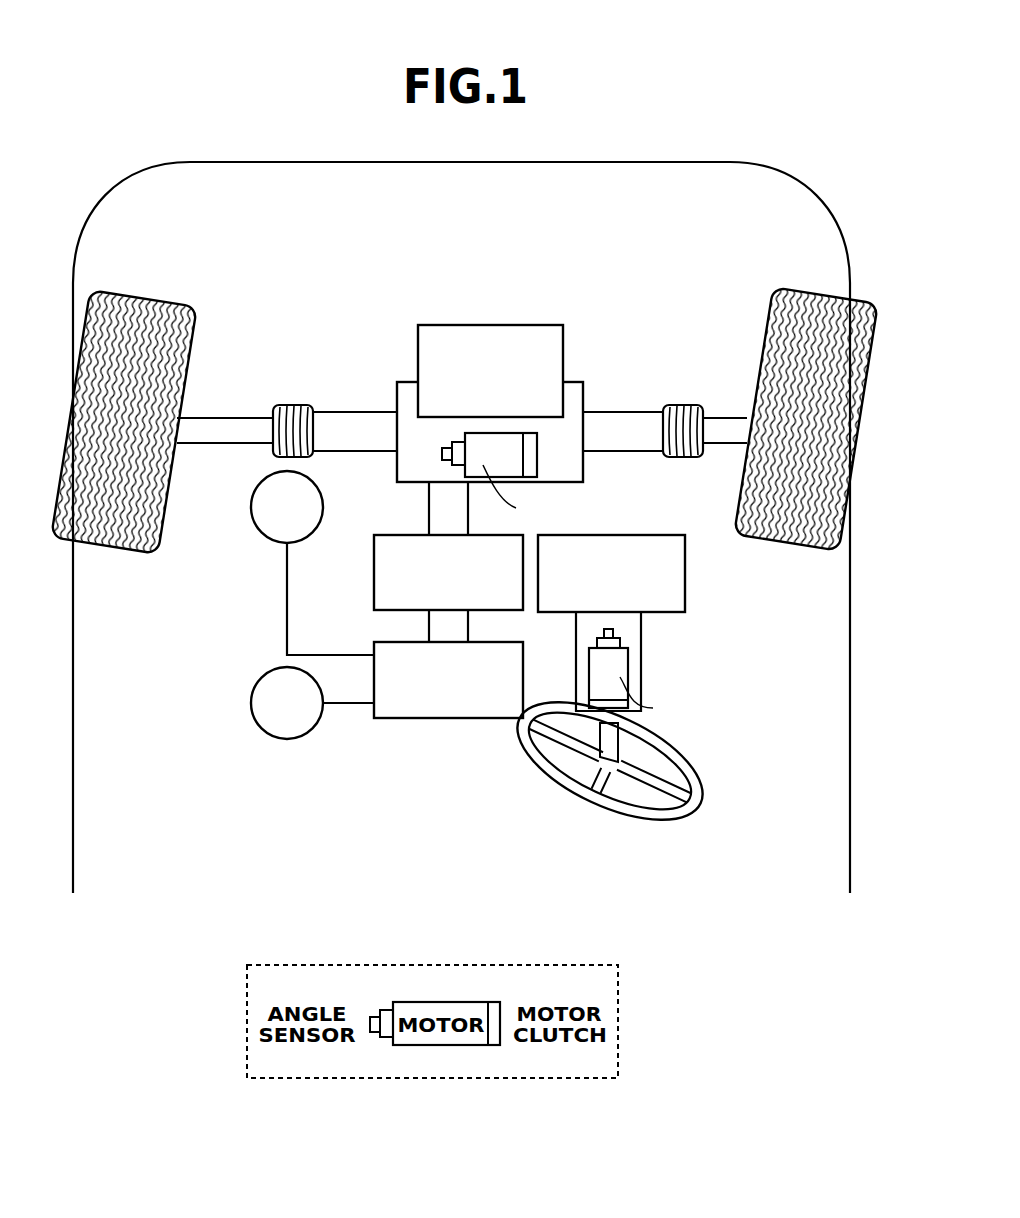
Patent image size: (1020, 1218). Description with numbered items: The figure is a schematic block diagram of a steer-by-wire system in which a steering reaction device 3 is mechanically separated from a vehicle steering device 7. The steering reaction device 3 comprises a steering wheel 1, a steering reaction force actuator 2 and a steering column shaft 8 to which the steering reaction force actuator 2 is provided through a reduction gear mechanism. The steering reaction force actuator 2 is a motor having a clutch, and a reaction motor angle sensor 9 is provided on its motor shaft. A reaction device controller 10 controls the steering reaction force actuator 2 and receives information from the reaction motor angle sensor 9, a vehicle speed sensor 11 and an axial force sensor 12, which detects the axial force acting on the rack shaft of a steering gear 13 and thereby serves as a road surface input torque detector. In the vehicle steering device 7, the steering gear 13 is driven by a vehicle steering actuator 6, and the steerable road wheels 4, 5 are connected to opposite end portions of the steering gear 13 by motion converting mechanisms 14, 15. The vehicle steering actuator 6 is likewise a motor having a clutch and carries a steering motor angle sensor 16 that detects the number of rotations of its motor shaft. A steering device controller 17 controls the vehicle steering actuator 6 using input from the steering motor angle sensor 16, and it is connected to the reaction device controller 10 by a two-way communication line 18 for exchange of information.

The steering wheel 1 is at (681, 814).
The steering reaction force actuator 2 is at (690, 686).
The steering reaction device 3 is at (651, 619).
The steerable road wheel 4 is at (69, 405).
The steerable road wheel 5 is at (868, 395).
The vehicle steering actuator 6 is at (587, 392).
The vehicle steering device 7 is at (491, 392).
The steering column shaft 8 is at (622, 748).
The reaction motor angle sensor 9 is at (667, 535).
The reaction device controller 10 is at (450, 720).
The vehicle speed sensor 11 is at (250, 701).
The axial force sensor 12 is at (251, 505).
The steering gear 13 is at (357, 412).
The motion converting mechanism 14 is at (233, 420).
The motion converting mechanism 15 is at (722, 420).
The steering motor angle sensor 16 is at (418, 338).
The steering device controller 17 is at (383, 535).
The two-way communication line 18 is at (468, 637).